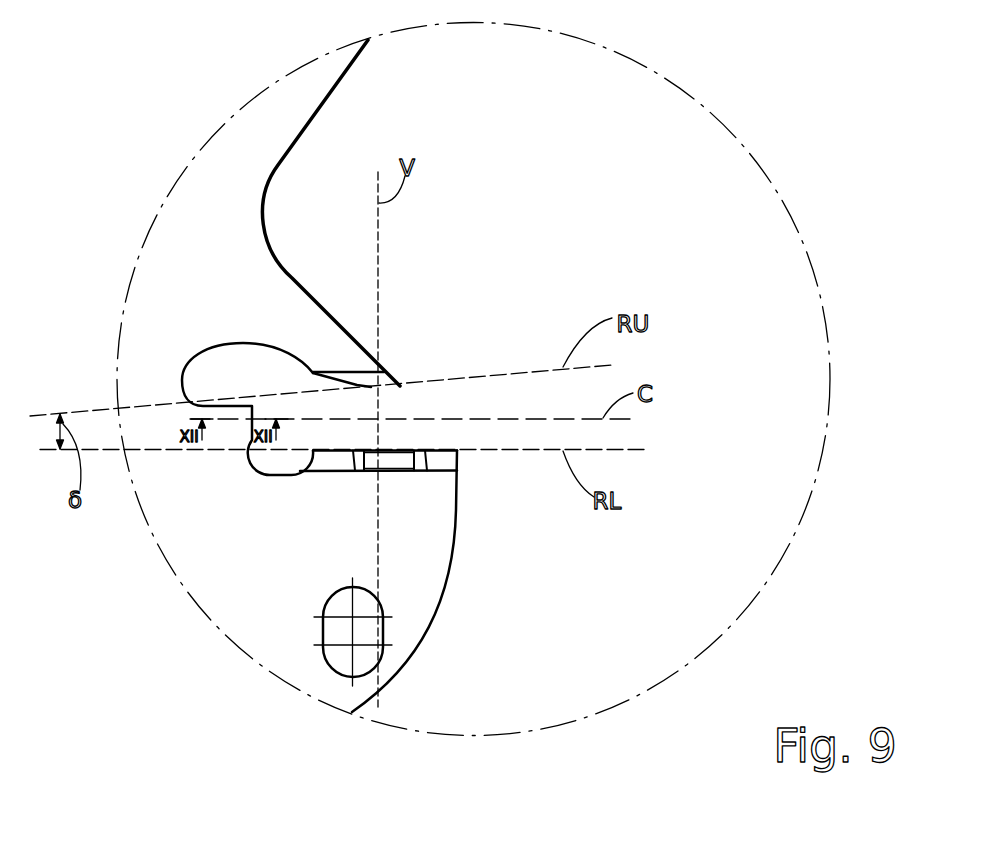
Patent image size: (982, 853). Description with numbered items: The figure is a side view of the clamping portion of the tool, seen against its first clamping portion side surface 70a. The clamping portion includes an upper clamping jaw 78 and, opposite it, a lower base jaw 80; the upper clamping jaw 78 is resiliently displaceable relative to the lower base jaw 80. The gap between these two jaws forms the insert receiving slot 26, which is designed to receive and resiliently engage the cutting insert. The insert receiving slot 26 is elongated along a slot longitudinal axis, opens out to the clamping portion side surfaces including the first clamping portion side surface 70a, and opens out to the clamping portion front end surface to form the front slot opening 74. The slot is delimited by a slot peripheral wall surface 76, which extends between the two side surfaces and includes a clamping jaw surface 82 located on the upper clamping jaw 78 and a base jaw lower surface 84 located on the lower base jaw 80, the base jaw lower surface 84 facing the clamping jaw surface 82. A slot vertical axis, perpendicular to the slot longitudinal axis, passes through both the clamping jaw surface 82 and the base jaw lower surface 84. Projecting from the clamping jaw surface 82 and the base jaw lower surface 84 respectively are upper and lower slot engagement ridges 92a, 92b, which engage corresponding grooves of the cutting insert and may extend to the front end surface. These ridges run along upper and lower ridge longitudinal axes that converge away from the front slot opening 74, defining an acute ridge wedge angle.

The insert receiving slot 26 is at (487, 346).
The first clamping portion side surface 70a is at (217, 585).
The front slot opening 74 is at (414, 405).
The slot peripheral wall surface 76 is at (213, 348).
The upper clamping jaw 78 is at (284, 309).
The lower base jaw 80 is at (419, 516).
The clamping jaw surface 82 is at (385, 381).
The base jaw lower surface 84 is at (439, 459).
The upper slot engagement ridge 92a is at (350, 385).
The lower slot engagement ridge 92b is at (330, 459).